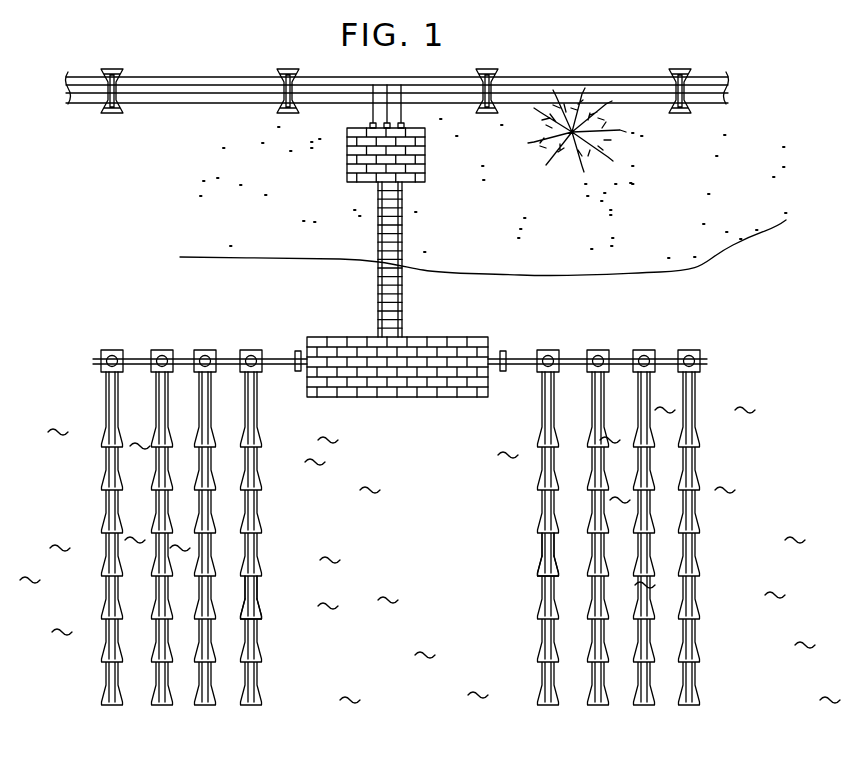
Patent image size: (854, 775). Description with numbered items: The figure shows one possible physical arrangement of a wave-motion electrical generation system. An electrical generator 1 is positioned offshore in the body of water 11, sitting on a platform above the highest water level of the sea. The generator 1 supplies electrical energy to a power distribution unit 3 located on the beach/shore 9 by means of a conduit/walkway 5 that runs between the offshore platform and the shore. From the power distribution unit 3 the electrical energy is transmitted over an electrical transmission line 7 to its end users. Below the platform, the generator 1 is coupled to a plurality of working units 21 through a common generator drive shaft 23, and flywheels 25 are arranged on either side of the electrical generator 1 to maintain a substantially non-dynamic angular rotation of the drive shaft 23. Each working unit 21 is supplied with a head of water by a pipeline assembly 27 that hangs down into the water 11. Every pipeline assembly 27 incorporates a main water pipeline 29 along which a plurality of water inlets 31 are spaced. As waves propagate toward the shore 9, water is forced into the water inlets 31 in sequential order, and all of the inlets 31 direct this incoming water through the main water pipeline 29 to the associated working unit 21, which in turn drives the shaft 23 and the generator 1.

The electrical generator 1 is at (431, 336).
The power distribution unit 3 is at (427, 163).
The conduit/walkway 5 is at (406, 254).
The electrical transmission line 7 is at (251, 106).
The beach/shore 9 is at (651, 219).
The body of water 11 is at (383, 530).
The working unit 21 is at (113, 350).
The common generator drive shaft 23 is at (185, 357).
The flywheel 25 is at (503, 373).
The pipeline assembly 27 is at (262, 505).
The main water pipeline 29 is at (258, 588).
The water inlet 31 is at (258, 614).